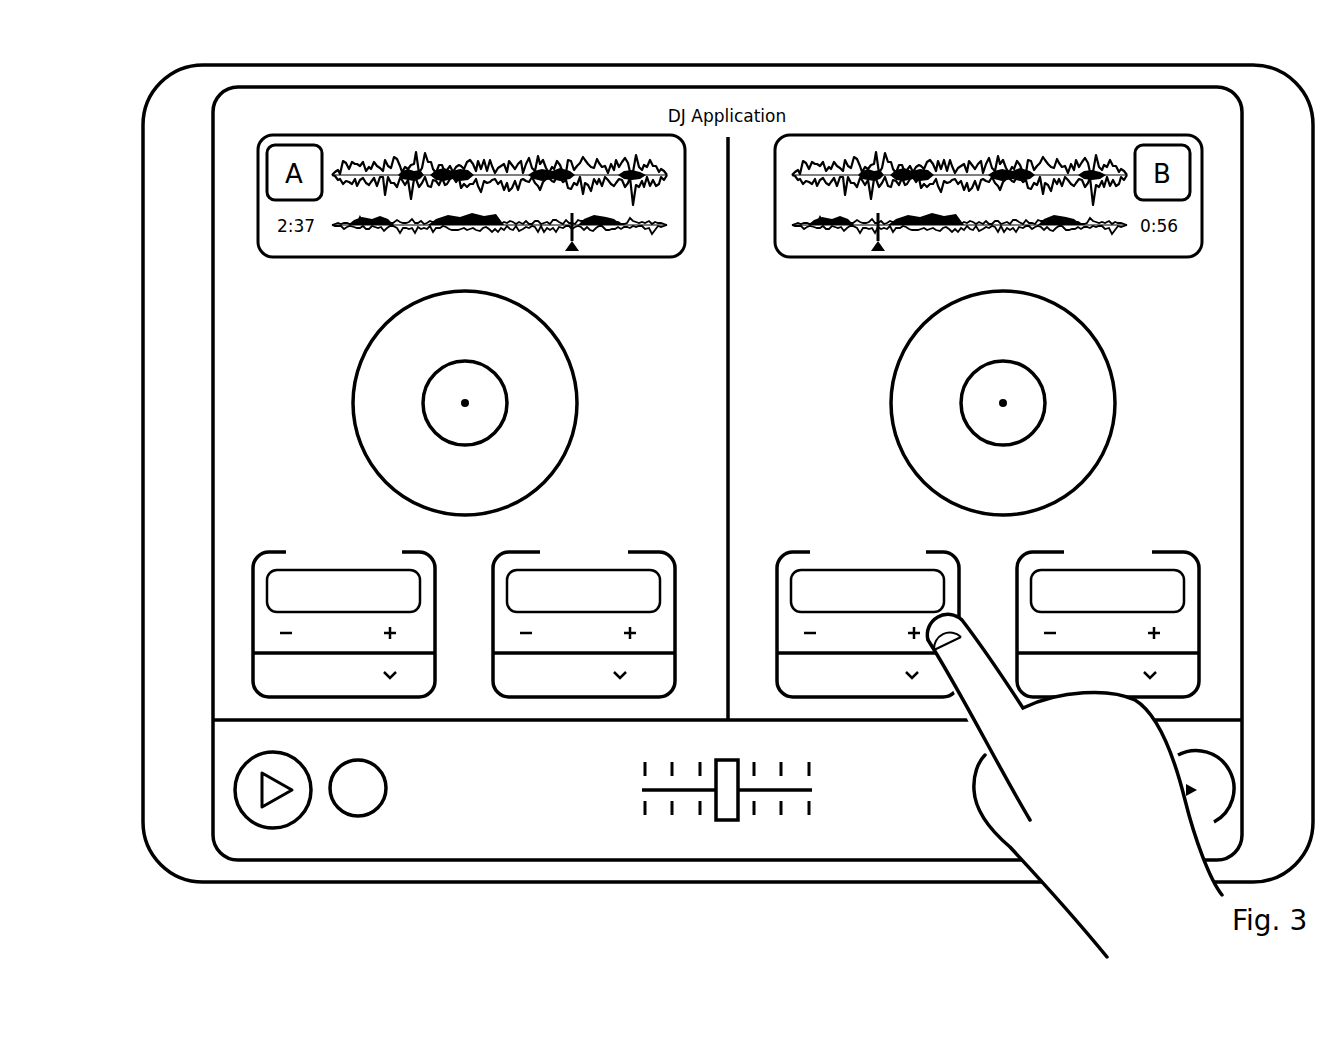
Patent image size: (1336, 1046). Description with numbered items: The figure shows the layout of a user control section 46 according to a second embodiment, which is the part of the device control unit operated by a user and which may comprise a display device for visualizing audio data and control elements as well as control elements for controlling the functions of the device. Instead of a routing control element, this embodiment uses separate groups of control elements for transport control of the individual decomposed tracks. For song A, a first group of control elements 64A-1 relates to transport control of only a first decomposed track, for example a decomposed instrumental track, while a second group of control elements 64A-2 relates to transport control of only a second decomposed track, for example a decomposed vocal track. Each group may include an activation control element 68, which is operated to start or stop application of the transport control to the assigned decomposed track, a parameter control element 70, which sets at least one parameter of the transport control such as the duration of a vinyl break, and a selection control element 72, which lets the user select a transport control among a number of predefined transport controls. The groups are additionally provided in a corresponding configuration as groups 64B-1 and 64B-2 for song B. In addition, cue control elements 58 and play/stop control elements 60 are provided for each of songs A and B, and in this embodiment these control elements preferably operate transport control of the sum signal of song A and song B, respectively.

The user control section 46 is at (135, 101).
The first group of control elements 64A-1 is at (294, 603).
The second group of control elements 64A-2 is at (656, 560).
The first group of control elements for song B 64B-1 is at (793, 560).
The second group of control elements for song B 64B-2 is at (1050, 558).
The activation control element 68 is at (277, 603).
The parameter control element 70 is at (268, 640).
The selection control element 72 is at (268, 675).
The play/stop control element 60 is at (257, 782).
The cue control element 58 is at (339, 787).